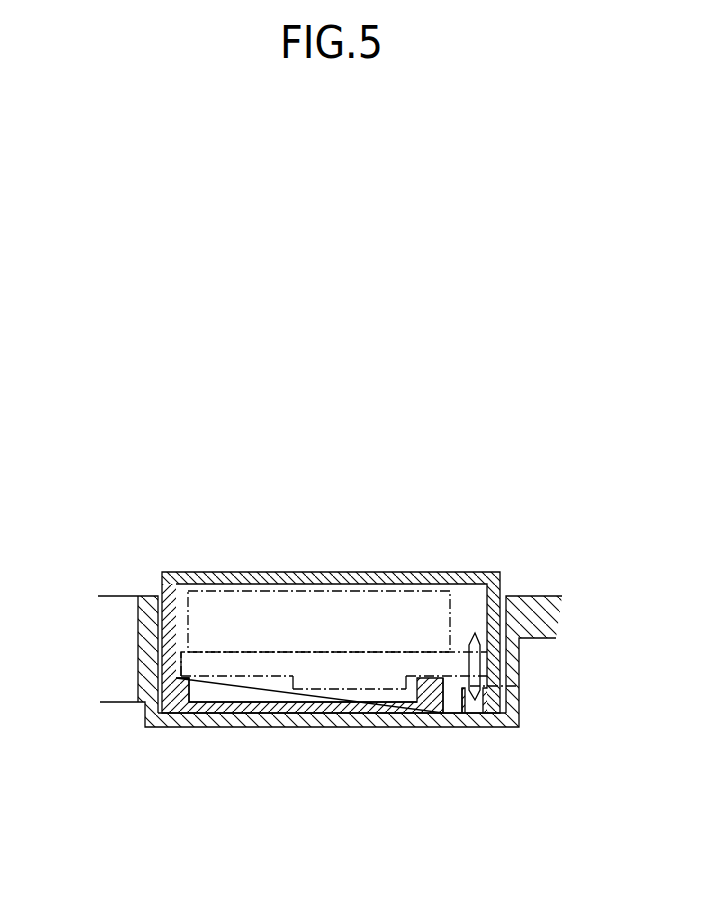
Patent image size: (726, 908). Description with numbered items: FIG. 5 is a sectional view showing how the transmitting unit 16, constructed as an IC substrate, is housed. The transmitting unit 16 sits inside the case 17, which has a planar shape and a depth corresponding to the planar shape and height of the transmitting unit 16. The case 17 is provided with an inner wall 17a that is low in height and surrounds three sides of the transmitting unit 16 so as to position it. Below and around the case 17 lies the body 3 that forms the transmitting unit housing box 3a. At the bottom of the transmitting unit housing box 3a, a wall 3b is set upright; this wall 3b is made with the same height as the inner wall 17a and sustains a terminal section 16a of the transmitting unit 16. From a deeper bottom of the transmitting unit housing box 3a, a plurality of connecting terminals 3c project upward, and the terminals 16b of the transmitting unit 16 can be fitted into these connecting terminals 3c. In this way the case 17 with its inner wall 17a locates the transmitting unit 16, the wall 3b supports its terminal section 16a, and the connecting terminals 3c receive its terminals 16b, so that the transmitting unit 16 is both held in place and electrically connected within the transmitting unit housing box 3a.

The holder 3 is at (530, 605).
The transmitting unit housing box 3a is at (256, 704).
The wall 3b is at (450, 683).
The connecting terminals 3c is at (473, 697).
The transmitting unit 16 is at (278, 628).
The terminal section 16a is at (349, 662).
The terminals 16b is at (519, 686).
The case 17 is at (415, 550).
The inner wall 17a is at (192, 693).